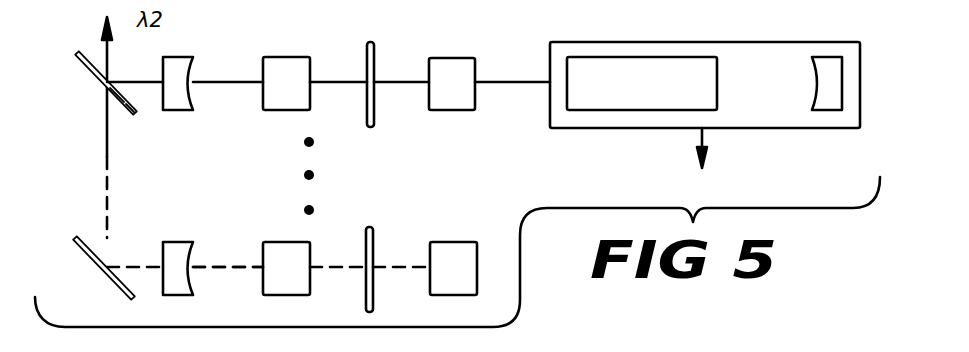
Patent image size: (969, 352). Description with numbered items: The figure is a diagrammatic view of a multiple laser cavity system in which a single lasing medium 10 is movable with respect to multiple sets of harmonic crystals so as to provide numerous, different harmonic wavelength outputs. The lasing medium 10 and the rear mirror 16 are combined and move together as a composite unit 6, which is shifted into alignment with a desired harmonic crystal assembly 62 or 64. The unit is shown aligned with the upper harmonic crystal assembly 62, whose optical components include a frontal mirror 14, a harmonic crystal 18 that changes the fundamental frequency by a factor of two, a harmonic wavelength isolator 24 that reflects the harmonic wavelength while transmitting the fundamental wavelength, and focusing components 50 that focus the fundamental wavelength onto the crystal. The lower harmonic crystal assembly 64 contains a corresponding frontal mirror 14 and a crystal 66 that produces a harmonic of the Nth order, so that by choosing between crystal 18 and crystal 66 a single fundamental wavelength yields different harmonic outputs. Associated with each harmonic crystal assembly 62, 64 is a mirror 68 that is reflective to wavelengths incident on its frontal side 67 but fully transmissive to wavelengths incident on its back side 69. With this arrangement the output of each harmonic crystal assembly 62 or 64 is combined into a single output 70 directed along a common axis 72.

The composite unit 6 is at (745, 42).
The lasing medium 10 is at (638, 57).
The frontal mirror 14 is at (181, 55).
The rear mirror 16 is at (830, 57).
The harmonic crystal 18 is at (292, 57).
The harmonic wavelength isolator 24 is at (370, 42).
The focusing components 50 is at (445, 58).
The harmonic crystal assembly 62 is at (238, 58).
The harmonic crystal assembly 64 is at (239, 242).
The crystal 66 is at (295, 242).
The frontal side 67 is at (135, 112).
The mirror 68 is at (97, 78).
The back side 69 is at (122, 106).
The single output 70 is at (135, 30).
The axis 72 is at (98, 176).